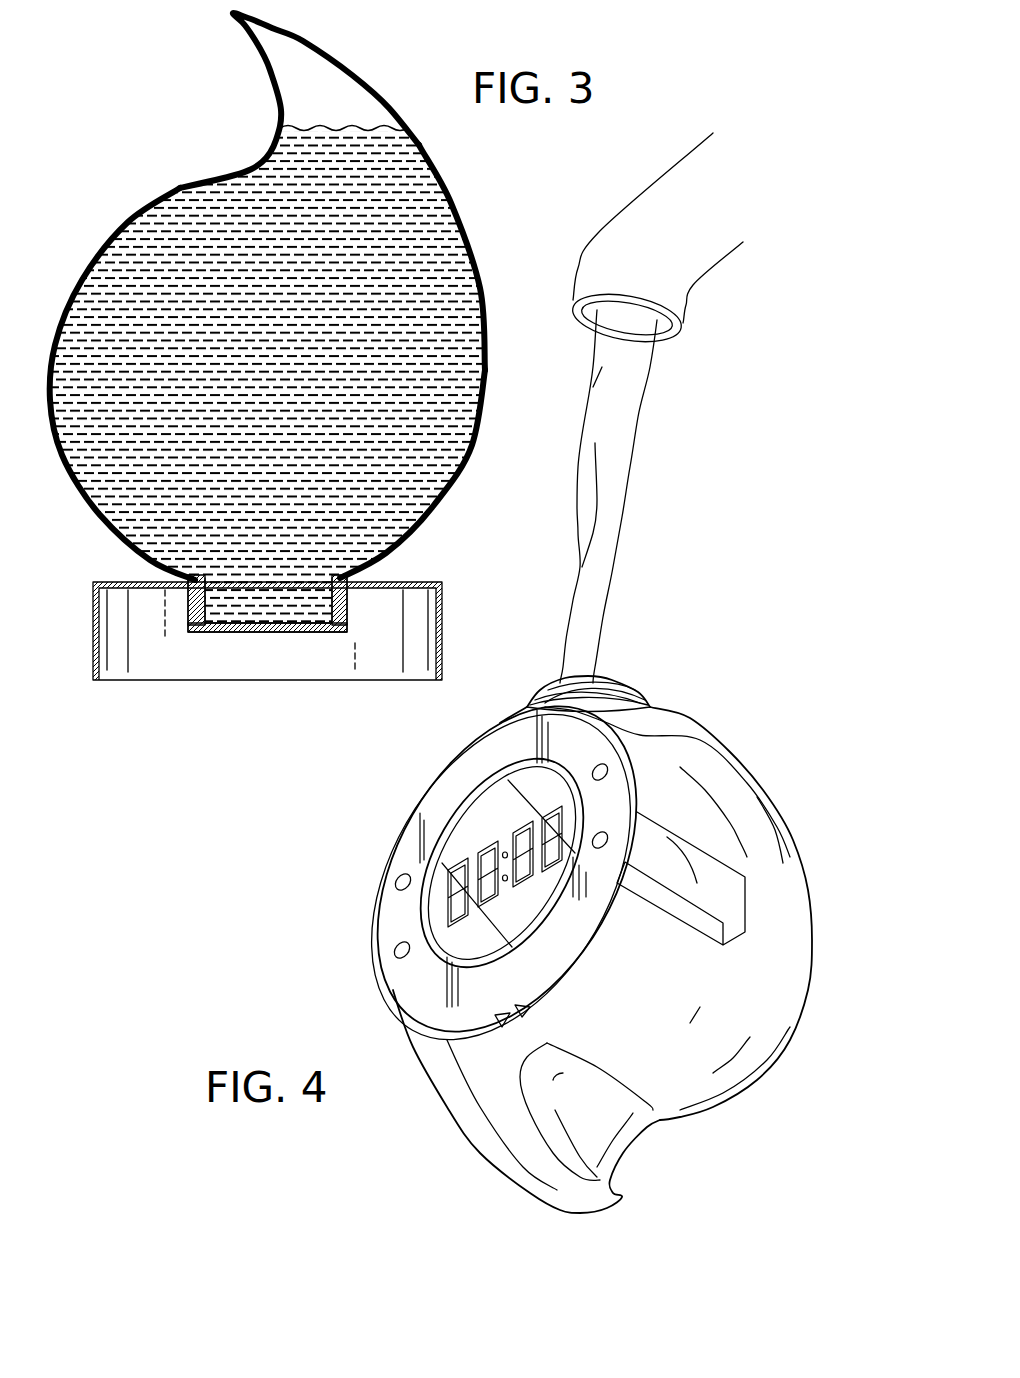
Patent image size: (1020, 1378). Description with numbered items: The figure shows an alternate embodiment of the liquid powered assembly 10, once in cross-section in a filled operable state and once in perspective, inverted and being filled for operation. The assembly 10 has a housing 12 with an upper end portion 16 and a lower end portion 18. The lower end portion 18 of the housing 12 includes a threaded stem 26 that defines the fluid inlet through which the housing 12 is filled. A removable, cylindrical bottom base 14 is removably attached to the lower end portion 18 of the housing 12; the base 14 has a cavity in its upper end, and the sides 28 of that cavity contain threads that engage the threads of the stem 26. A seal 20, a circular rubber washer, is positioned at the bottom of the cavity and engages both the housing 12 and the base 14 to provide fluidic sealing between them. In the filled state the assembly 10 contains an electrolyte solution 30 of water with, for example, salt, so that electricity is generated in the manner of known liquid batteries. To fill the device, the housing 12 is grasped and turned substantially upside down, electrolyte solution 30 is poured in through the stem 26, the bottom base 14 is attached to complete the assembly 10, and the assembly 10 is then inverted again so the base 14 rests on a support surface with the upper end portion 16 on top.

In FIG. 3, the liquid powered assembly 10 is at (158, 157).
In FIG. 3, the housing 12 is at (480, 250).
In FIG. 4, the housing 12 is at (723, 735).
In FIG. 3, the removable bottom base 14 is at (443, 622).
In FIG. 3, the upper end portion 16 is at (450, 186).
In FIG. 3, the lower end portion 18 is at (440, 510).
In FIG. 3, the seal 20 is at (248, 630).
In FIG. 3, the stem 26 is at (192, 603).
In FIG. 4, the stem 26 is at (627, 688).
In FIG. 3, the sides of the cavity 28 is at (195, 607).
In FIG. 3, the electrolyte solution 30 is at (112, 262).